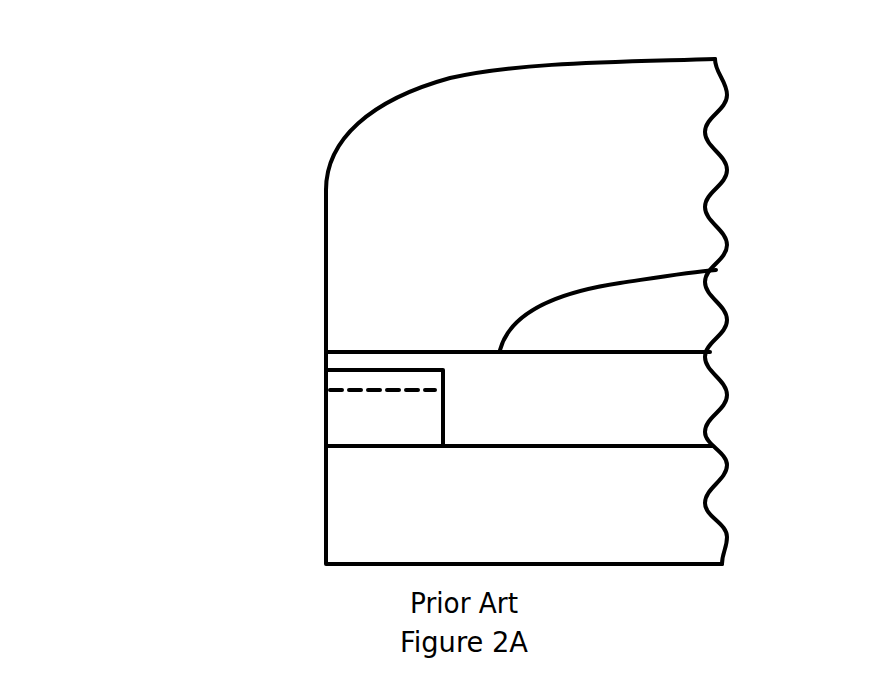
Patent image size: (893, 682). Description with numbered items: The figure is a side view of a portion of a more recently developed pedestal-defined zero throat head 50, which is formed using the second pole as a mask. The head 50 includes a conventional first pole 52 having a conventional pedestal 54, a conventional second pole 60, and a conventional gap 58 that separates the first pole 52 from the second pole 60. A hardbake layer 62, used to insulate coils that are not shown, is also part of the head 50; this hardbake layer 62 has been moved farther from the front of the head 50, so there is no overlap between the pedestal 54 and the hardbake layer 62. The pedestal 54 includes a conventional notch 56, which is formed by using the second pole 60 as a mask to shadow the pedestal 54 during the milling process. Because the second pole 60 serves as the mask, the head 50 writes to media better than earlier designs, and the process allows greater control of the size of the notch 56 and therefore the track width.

The pedestal-defined zero throat (PDZT) head 50 is at (476, 36).
The first pole (P1) 52 is at (132, 372).
The pedestal 54 is at (230, 372).
The notch 56 is at (326, 378).
The gap 58 is at (325, 363).
The second pole (P2) 60 is at (326, 276).
The hardbake layer 62 is at (731, 328).